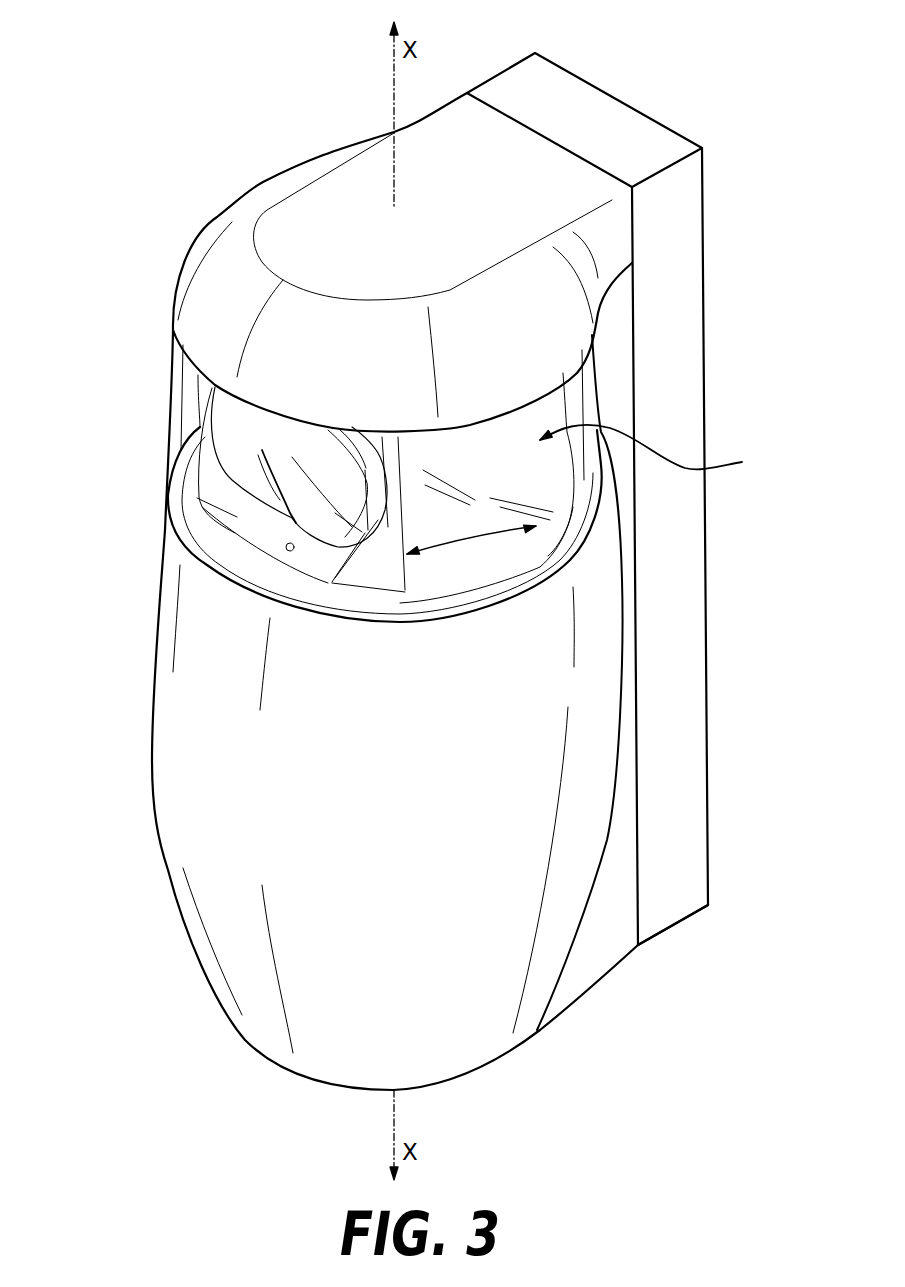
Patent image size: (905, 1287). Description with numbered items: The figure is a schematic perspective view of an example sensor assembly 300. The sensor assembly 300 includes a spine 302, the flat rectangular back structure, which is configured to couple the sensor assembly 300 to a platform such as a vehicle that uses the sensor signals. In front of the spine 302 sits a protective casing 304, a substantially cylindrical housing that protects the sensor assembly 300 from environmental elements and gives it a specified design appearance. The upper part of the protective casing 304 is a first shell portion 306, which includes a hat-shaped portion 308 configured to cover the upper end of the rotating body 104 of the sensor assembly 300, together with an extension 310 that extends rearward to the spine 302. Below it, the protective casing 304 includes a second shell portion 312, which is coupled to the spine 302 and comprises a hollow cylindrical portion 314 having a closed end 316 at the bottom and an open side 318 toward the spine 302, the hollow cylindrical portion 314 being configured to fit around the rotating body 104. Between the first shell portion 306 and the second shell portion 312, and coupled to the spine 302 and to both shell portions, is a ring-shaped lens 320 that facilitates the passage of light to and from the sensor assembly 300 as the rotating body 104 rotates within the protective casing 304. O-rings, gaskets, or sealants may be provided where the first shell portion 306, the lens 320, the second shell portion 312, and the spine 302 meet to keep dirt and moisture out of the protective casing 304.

The sensor assembly 300 is at (157, 88).
The spine 302 is at (703, 222).
The protective casing 304 is at (123, 672).
The first shell portion 306 is at (263, 197).
The hat-shaped portion 308 is at (350, 374).
The extension 310 is at (628, 246).
The second shell portion 312 is at (182, 840).
The hollow cylindrical portion 314 is at (348, 809).
The closed end 316 is at (330, 1088).
The open side 318 is at (613, 903).
The lens 320 is at (172, 432).
The rotating body 104 is at (657, 449).